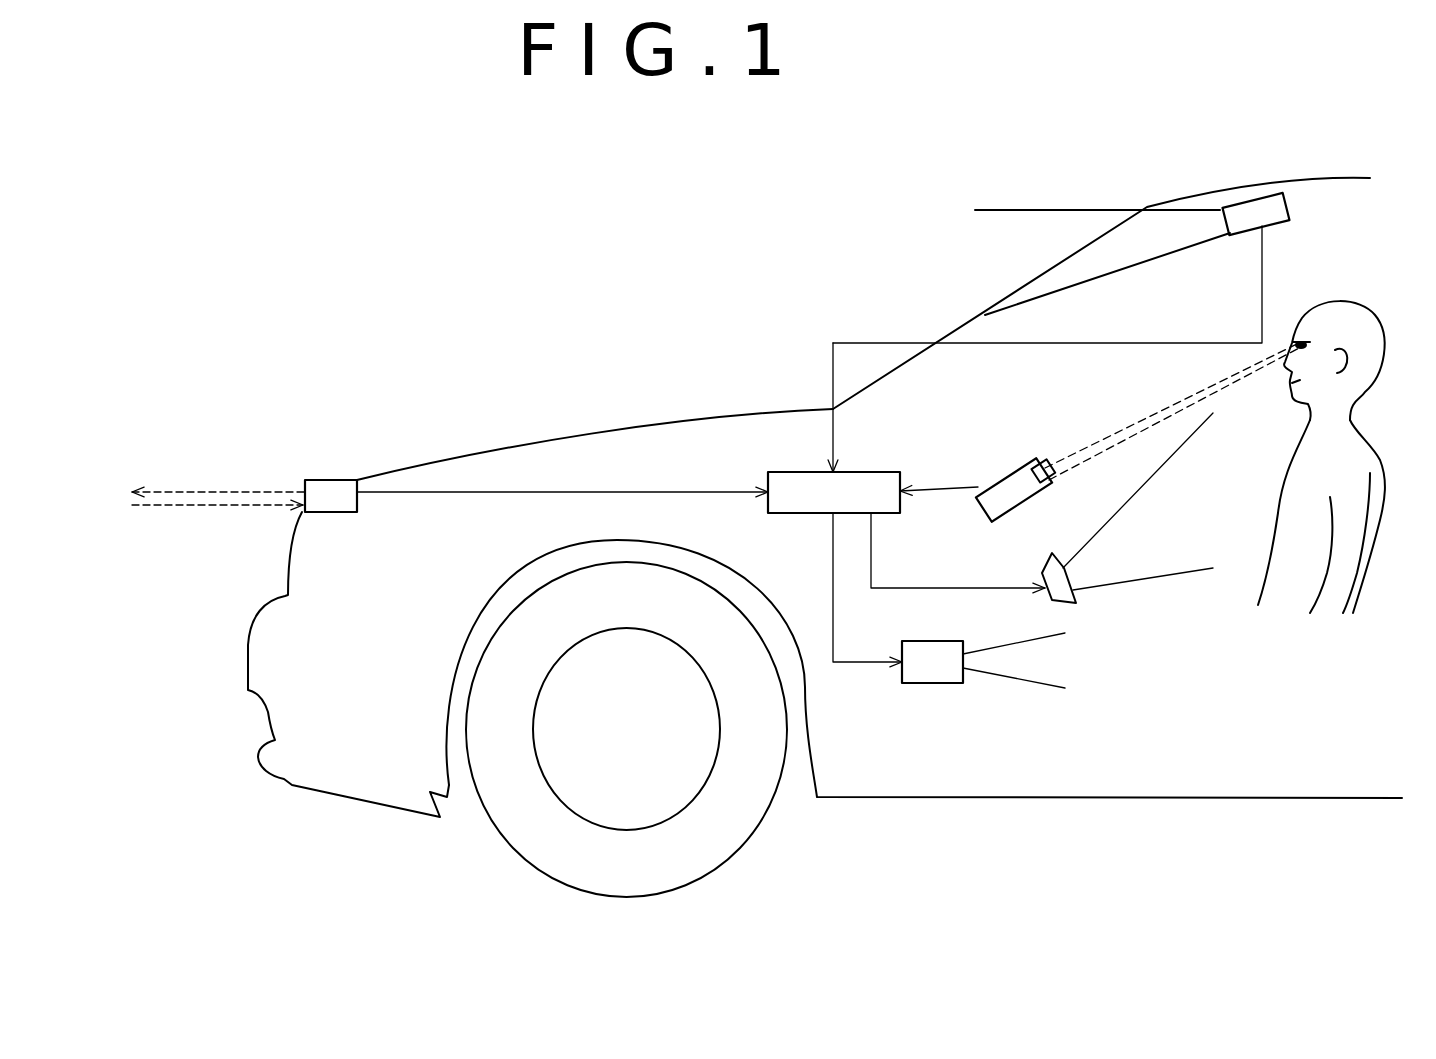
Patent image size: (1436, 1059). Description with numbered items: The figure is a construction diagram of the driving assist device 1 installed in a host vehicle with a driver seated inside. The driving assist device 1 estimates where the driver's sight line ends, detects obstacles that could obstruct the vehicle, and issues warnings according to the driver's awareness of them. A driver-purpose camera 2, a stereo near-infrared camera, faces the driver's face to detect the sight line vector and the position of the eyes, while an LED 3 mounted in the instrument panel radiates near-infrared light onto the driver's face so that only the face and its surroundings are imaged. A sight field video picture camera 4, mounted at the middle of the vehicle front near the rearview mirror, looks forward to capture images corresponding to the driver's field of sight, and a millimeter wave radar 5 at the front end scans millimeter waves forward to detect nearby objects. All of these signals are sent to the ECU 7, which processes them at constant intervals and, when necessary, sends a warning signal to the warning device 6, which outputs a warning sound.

The driving assist device 1 is at (806, 303).
The driver-purpose camera 2 is at (1003, 465).
The LED 3 is at (1068, 604).
The sight field video picture camera 4 is at (1240, 197).
The millimeter wave radar 5 is at (329, 479).
The warning device 6 is at (935, 684).
The ECU 7 is at (863, 471).